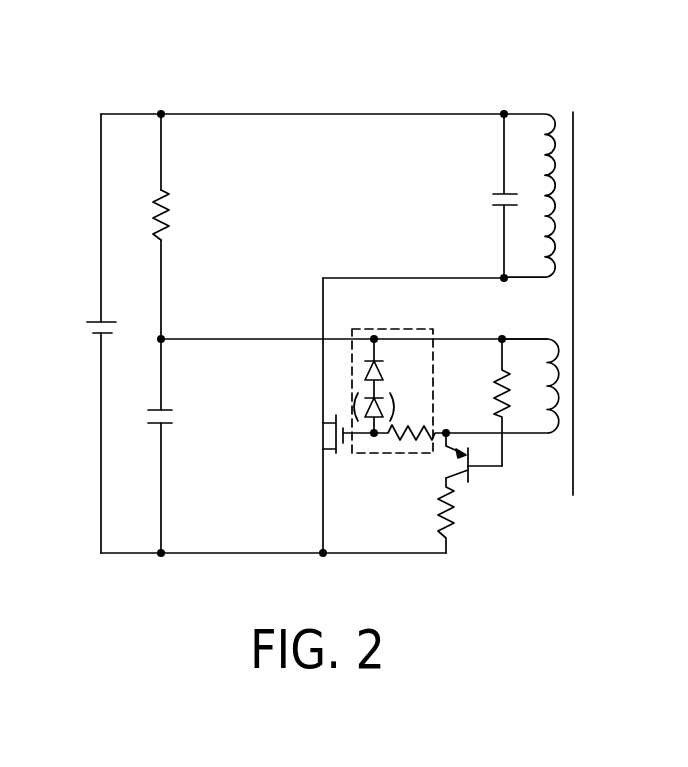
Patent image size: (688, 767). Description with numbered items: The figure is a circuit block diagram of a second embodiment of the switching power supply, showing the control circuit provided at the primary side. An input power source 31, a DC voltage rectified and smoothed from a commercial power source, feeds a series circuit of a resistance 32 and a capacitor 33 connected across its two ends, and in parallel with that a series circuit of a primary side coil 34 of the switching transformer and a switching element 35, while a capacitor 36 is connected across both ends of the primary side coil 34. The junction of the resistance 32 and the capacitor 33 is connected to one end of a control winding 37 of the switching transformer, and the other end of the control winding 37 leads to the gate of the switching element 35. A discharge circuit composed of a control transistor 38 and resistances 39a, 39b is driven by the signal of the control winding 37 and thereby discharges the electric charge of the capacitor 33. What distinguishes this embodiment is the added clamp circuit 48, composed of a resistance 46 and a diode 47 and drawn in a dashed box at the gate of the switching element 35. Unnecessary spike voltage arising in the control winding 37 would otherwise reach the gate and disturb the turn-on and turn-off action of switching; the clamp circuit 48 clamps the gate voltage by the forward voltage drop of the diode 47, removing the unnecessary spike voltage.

The input power source 31 is at (90, 337).
The resistance 32 is at (172, 216).
The capacitor 33 is at (168, 424).
The primary side coil of switching transformer 34 is at (546, 112).
The switching element 35 is at (322, 429).
The capacitor 36 is at (493, 200).
The control winding of switching transformer 37 is at (554, 425).
The control transistor 38 is at (470, 474).
The resistance 39a is at (498, 392).
The resistance 39b is at (452, 537).
The resistance 46 is at (398, 440).
The diode 47 is at (382, 372).
The clamp circuit 48 is at (400, 329).